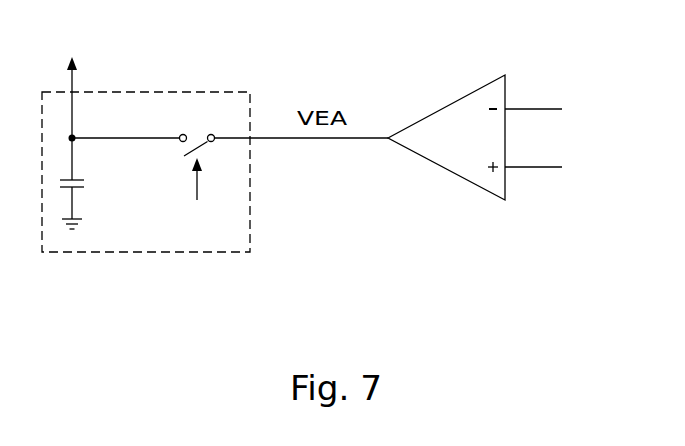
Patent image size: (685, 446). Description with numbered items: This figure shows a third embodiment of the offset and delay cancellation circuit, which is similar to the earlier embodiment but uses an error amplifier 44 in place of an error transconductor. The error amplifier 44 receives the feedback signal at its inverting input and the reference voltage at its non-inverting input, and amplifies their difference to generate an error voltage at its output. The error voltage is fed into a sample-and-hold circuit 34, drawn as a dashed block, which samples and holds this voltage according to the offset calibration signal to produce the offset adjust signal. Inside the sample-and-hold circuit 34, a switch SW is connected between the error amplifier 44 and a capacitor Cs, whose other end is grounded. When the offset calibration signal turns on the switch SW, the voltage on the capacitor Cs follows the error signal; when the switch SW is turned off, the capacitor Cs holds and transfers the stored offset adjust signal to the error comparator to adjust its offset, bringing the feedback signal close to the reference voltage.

The sample-and-hold circuit 34 is at (146, 170).
The error amplifier 44 is at (446, 104).
The switch SW is at (196, 132).
The capacitor Cs is at (90, 201).